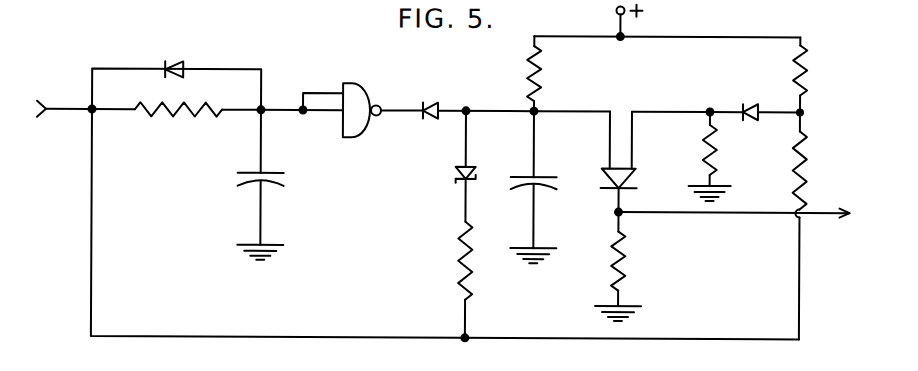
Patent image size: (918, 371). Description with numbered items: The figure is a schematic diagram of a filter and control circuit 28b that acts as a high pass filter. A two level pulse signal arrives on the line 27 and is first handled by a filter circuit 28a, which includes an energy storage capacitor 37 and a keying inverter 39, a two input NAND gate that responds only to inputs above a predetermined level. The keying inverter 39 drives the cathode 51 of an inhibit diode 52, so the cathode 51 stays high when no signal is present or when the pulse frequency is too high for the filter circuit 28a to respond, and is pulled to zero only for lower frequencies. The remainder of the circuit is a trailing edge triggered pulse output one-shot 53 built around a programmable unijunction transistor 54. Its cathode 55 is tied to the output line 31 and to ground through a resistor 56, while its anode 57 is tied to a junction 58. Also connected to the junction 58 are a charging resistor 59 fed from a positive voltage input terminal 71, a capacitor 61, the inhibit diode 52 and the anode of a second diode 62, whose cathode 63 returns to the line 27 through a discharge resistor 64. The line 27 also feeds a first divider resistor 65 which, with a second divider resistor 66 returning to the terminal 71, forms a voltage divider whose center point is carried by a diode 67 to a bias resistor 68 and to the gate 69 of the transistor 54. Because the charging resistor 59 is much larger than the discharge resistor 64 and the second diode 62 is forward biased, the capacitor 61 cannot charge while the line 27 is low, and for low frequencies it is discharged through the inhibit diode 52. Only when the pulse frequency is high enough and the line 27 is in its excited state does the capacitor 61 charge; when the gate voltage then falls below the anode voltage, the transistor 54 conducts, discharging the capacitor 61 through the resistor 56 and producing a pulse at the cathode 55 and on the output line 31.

The line 27 is at (62, 109).
The filter circuit 28a is at (228, 58).
The filter and control circuit 28b is at (452, 48).
The output line 31 is at (822, 207).
The energy storage capacitor 37 is at (269, 181).
The keying inverter 39 is at (353, 94).
The cathode 51 is at (423, 105).
The inhibit diode 52 is at (436, 102).
The trailing edge triggered pulse output one-shot 53 is at (690, 31).
The programmable unijunction transistor 54 is at (611, 175).
The cathode 55 is at (631, 186).
The resistor 56 is at (630, 266).
The anode 57 is at (608, 128).
The junction 58 is at (537, 108).
The charging resistor 59 is at (529, 68).
The capacitor 61 is at (527, 174).
The second diode 62 is at (455, 165).
The cathode 63 is at (460, 178).
The discharge resistor 64 is at (458, 265).
The first divider resistor 65 is at (808, 155).
The second divider resistor 66 is at (808, 74).
The diode 67 is at (756, 93).
The bias resistor 68 is at (724, 148).
The gate 69 is at (634, 132).
The positive voltage input terminal 71 is at (616, 9).